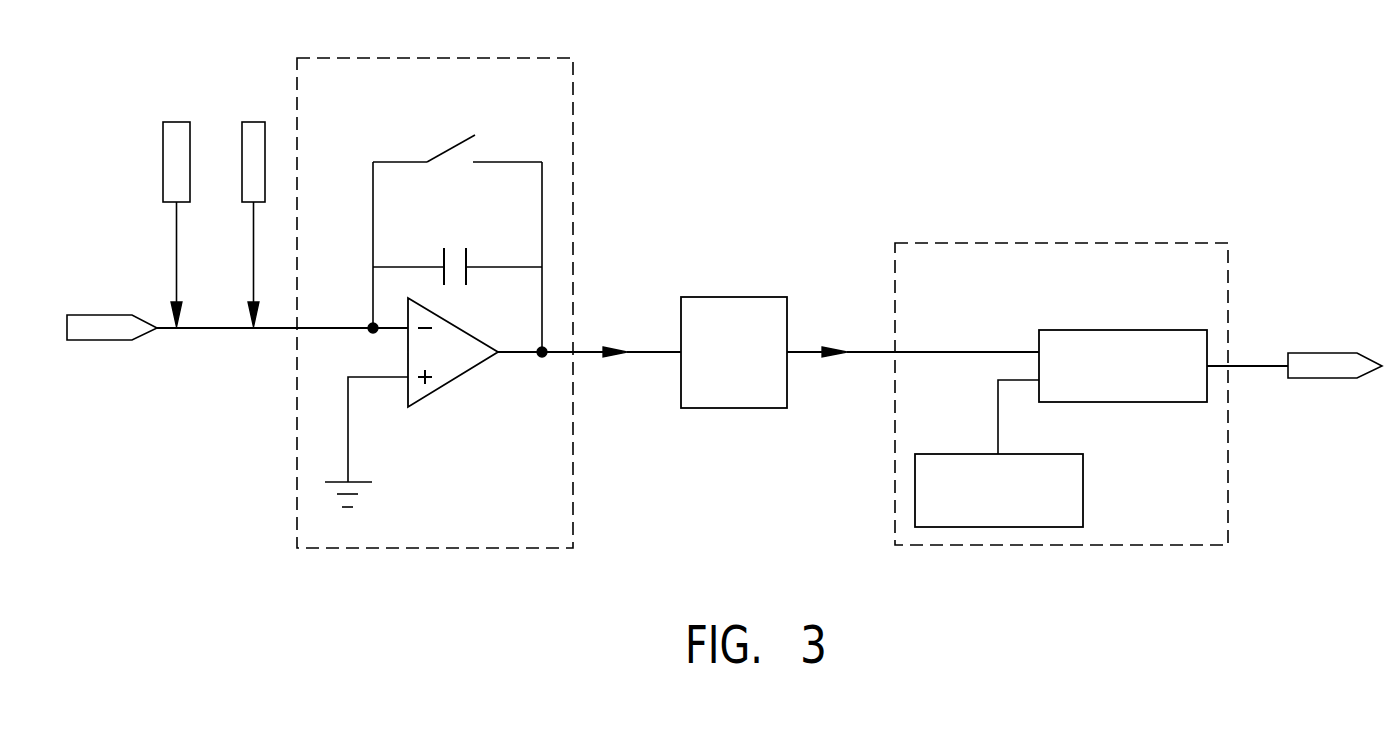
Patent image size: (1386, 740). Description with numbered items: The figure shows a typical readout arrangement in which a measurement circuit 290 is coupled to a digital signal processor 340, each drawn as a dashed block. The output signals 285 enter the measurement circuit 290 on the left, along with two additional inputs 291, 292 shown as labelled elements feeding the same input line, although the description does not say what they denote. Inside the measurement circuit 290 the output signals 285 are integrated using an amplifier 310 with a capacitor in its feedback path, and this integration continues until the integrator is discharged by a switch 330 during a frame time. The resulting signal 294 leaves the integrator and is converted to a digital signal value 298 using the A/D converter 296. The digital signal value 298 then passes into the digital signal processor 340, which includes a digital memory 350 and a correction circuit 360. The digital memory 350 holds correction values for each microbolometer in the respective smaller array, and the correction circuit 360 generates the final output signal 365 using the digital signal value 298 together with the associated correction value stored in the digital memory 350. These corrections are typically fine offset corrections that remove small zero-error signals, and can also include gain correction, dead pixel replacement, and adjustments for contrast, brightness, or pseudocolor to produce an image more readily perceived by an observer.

The output signals 285 is at (102, 312).
The first switching signal 291 is at (178, 119).
The second switching signal 292 is at (255, 119).
The measurement circuit 290 is at (486, 57).
The switch 330 is at (448, 146).
The amplifier 310 is at (454, 245).
The signal 294 is at (642, 354).
The A/D converter 296 is at (735, 297).
The digital signal value 298 is at (860, 354).
The digital signal processor 340 is at (1125, 241).
The correction circuit 360 is at (1121, 329).
The digital memory 350 is at (1084, 491).
The final output signal 365 is at (1323, 352).